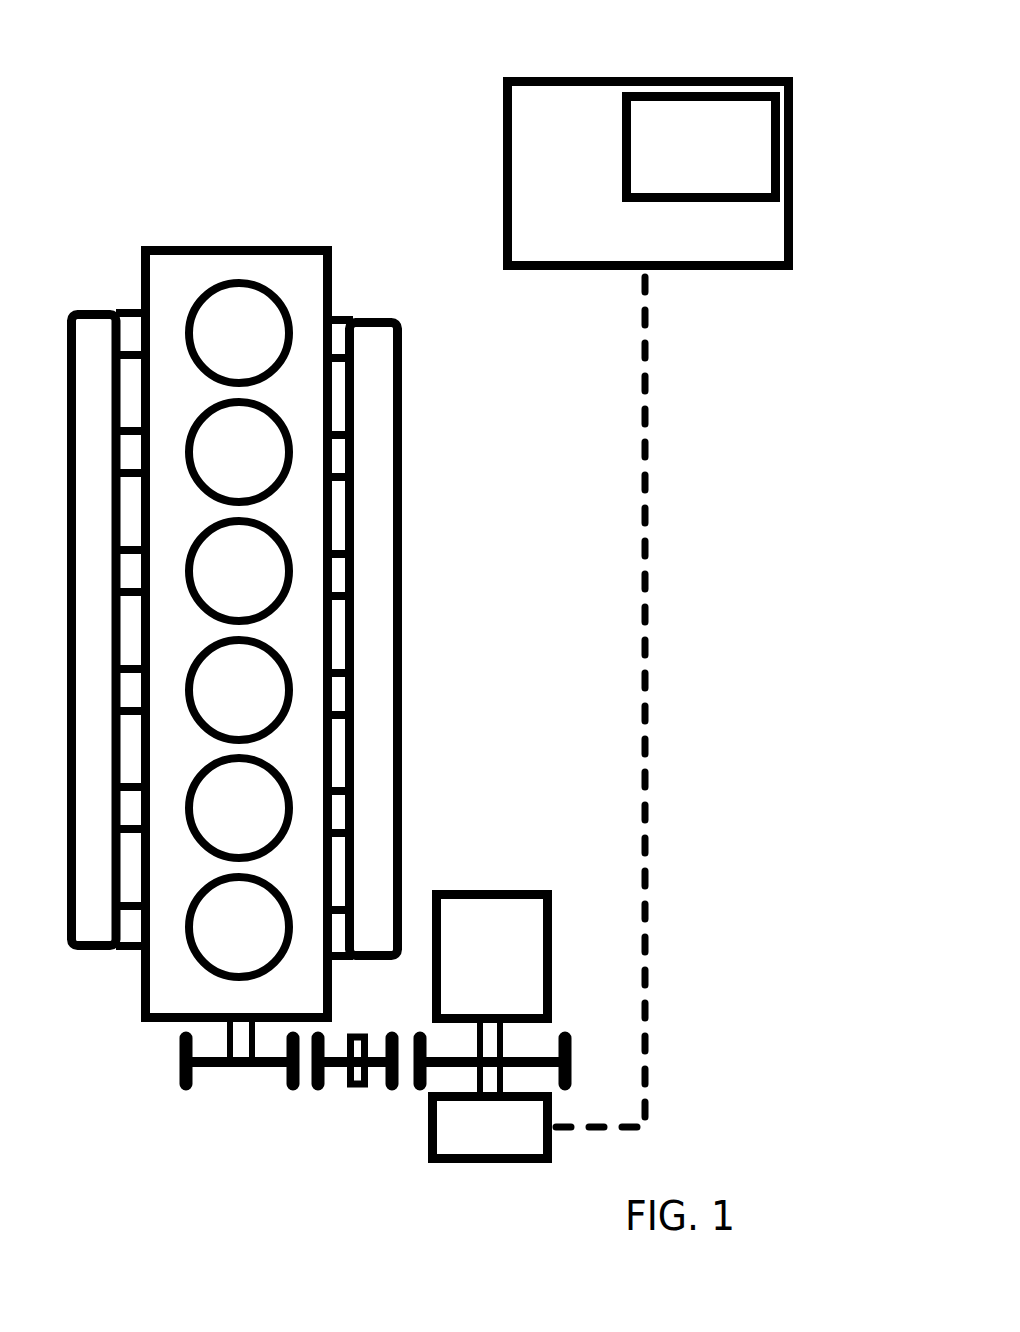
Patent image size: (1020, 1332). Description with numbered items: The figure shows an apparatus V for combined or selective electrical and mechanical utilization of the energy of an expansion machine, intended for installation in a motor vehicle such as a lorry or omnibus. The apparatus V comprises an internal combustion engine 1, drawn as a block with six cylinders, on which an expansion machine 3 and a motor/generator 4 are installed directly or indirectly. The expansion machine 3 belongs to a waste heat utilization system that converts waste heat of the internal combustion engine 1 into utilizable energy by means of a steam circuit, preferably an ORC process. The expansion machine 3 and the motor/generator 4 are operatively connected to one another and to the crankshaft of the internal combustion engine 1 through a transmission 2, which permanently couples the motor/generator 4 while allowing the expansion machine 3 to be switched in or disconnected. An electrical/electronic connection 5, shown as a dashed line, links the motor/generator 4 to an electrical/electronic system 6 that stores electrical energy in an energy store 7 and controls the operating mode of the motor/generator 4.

The apparatus V is at (163, 194).
The internal combustion engine 1 is at (263, 808).
The transmission 2 is at (350, 1083).
The expansion machine 3 is at (512, 918).
The motor/generator 4 is at (510, 1145).
The electrical/electronic connection 5 is at (640, 728).
The electrical/electronic system 6 is at (520, 150).
The energy store 7 is at (700, 115).